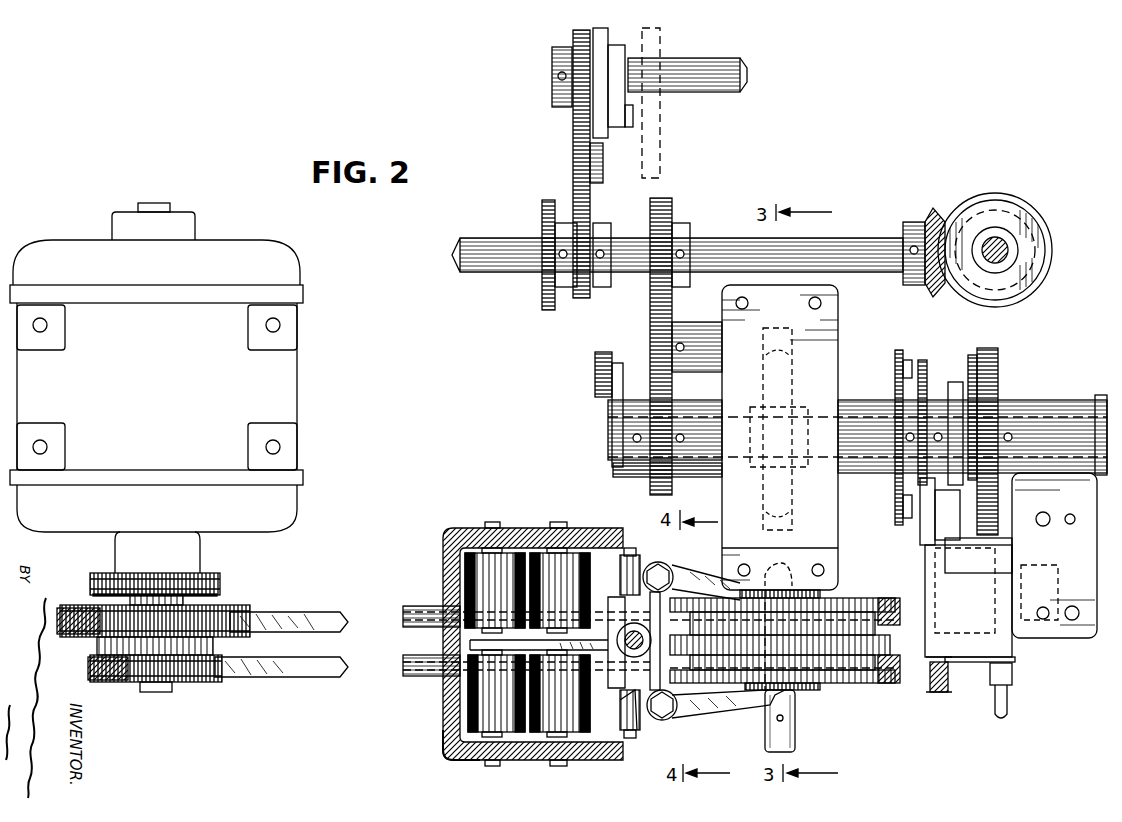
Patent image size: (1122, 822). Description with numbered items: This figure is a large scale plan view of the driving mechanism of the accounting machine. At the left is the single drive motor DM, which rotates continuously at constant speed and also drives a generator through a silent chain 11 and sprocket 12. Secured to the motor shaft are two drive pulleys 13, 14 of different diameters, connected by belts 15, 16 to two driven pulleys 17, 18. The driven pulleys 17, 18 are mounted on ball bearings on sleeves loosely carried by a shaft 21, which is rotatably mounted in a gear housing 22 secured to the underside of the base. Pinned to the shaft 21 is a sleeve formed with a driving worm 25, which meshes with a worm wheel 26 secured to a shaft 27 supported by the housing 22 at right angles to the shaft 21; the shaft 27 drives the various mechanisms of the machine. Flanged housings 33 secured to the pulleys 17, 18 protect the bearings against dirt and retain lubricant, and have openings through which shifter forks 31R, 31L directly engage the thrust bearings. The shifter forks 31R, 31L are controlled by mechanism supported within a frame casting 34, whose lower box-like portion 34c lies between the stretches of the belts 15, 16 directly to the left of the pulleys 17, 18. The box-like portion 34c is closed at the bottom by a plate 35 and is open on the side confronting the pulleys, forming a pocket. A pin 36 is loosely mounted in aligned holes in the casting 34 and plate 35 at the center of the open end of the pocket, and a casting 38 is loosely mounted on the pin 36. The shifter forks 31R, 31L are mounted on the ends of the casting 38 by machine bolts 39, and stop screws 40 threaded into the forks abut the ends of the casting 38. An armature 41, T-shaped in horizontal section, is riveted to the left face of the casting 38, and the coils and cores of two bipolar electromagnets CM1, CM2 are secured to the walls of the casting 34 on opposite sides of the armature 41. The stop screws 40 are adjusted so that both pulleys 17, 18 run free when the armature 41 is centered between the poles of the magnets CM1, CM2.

The drive motor DM is at (258, 389).
The sprocket 12 is at (193, 583).
The silent chain 11 is at (220, 592).
The drive pulley 13 is at (245, 607).
The belt 16 is at (294, 620).
The drive pulley 14 is at (218, 684).
The belt 15 is at (292, 668).
The gear housing 22 is at (838, 349).
The worm wheel 26 is at (768, 515).
The driving worm 25 is at (800, 470).
The shaft 27 is at (861, 411).
The driven pulley 17 is at (873, 673).
The driven pulley 18 is at (865, 598).
The flanged housing 33 is at (830, 591).
The machine bolt 39 is at (652, 562).
The shifter fork 31R is at (702, 572).
The shifter fork 31L is at (718, 705).
The shaft 21 is at (768, 720).
The pin 36 is at (632, 633).
The casting 38 is at (622, 680).
The stop screw 40 is at (626, 553).
The plate 35 is at (606, 730).
The frame casting 34 is at (457, 530).
The box-like portion 34c is at (448, 728).
The bipolar electromagnet CM2 is at (483, 580).
The bipolar electromagnet CM1 is at (478, 692).
The armature 41 is at (478, 643).